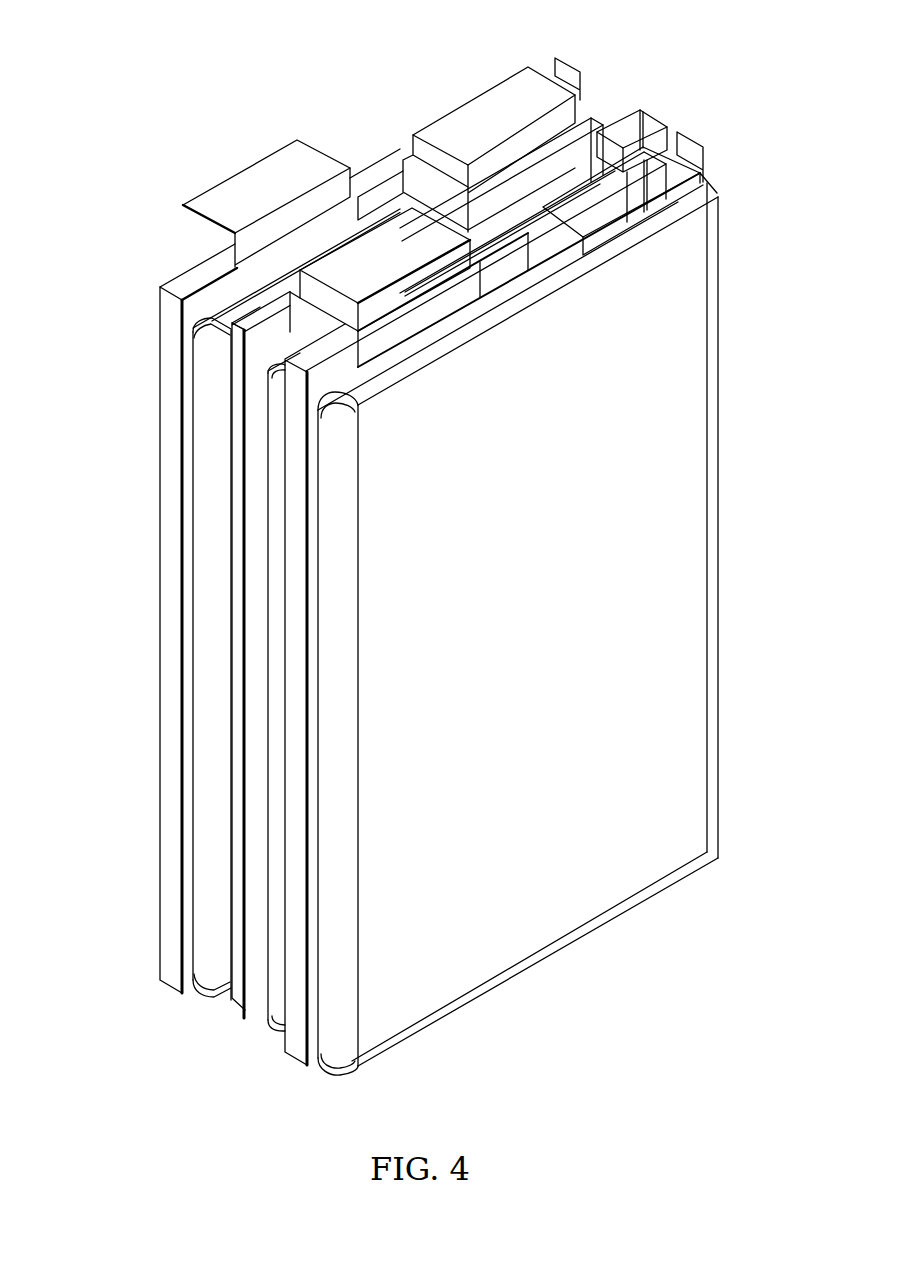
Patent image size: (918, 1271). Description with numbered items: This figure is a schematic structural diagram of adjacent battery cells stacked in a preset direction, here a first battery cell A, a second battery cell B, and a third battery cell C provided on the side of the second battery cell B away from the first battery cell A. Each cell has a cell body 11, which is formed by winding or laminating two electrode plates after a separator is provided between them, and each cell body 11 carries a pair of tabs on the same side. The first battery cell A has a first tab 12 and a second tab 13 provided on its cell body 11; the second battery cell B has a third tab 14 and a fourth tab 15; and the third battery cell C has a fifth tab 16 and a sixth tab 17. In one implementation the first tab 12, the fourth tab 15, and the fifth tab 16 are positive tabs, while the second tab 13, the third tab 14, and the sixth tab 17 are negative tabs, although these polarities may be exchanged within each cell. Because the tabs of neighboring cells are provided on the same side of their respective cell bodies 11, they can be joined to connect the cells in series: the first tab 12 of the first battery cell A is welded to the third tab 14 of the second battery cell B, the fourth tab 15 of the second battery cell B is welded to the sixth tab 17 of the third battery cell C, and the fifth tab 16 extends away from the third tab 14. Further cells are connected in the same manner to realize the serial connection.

The cell body 11 is at (217, 728).
The first tab 12 is at (470, 118).
The second tab 13 is at (250, 188).
The third tab 14 is at (578, 125).
The fourth tab 15 is at (350, 276).
The fifth tab 16 is at (665, 172).
The sixth tab 17 is at (232, 338).
The first battery cell A is at (215, 410).
The second battery cell B is at (648, 134).
The third battery cell C is at (682, 492).